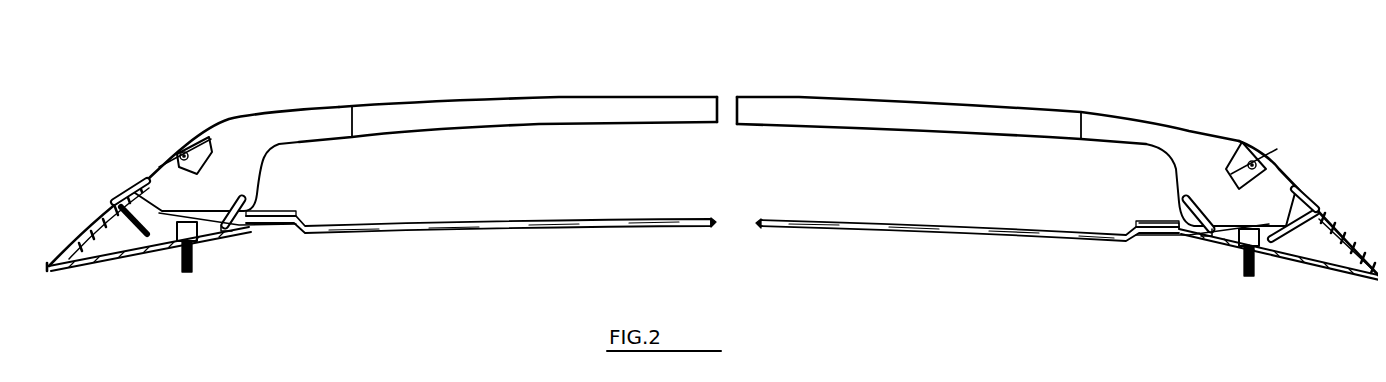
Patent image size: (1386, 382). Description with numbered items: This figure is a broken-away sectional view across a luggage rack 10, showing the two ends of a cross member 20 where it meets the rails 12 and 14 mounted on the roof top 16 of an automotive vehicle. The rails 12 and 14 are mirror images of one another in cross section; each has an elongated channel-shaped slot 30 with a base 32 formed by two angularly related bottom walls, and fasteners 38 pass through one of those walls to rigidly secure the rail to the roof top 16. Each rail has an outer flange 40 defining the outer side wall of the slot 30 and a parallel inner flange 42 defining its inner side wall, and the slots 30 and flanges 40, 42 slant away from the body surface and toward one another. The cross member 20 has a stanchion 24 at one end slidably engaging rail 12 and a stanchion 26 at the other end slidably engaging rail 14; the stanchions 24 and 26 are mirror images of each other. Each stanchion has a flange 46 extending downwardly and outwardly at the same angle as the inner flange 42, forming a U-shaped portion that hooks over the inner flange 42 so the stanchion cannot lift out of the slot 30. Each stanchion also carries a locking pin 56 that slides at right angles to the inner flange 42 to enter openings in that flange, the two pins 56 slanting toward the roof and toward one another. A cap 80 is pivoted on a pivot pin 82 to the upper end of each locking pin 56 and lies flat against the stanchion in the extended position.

The luggage rack 10 is at (1204, 117).
The rail 12 is at (98, 223).
The rail 14 is at (1347, 228).
The roof top 16 is at (950, 228).
The cross member 20 is at (588, 97).
The stanchion 24 is at (267, 116).
The stanchion 26 is at (1193, 132).
The slot 30 is at (130, 212).
The base 32 is at (143, 232).
The fastener 38 is at (197, 258).
The outer flange 40 is at (123, 183).
The inner flange 42 is at (237, 196).
The flange 46 is at (253, 209).
The locking pin 56 is at (193, 152).
The cap 80 is at (167, 162).
The pivot pin 82 is at (183, 163).